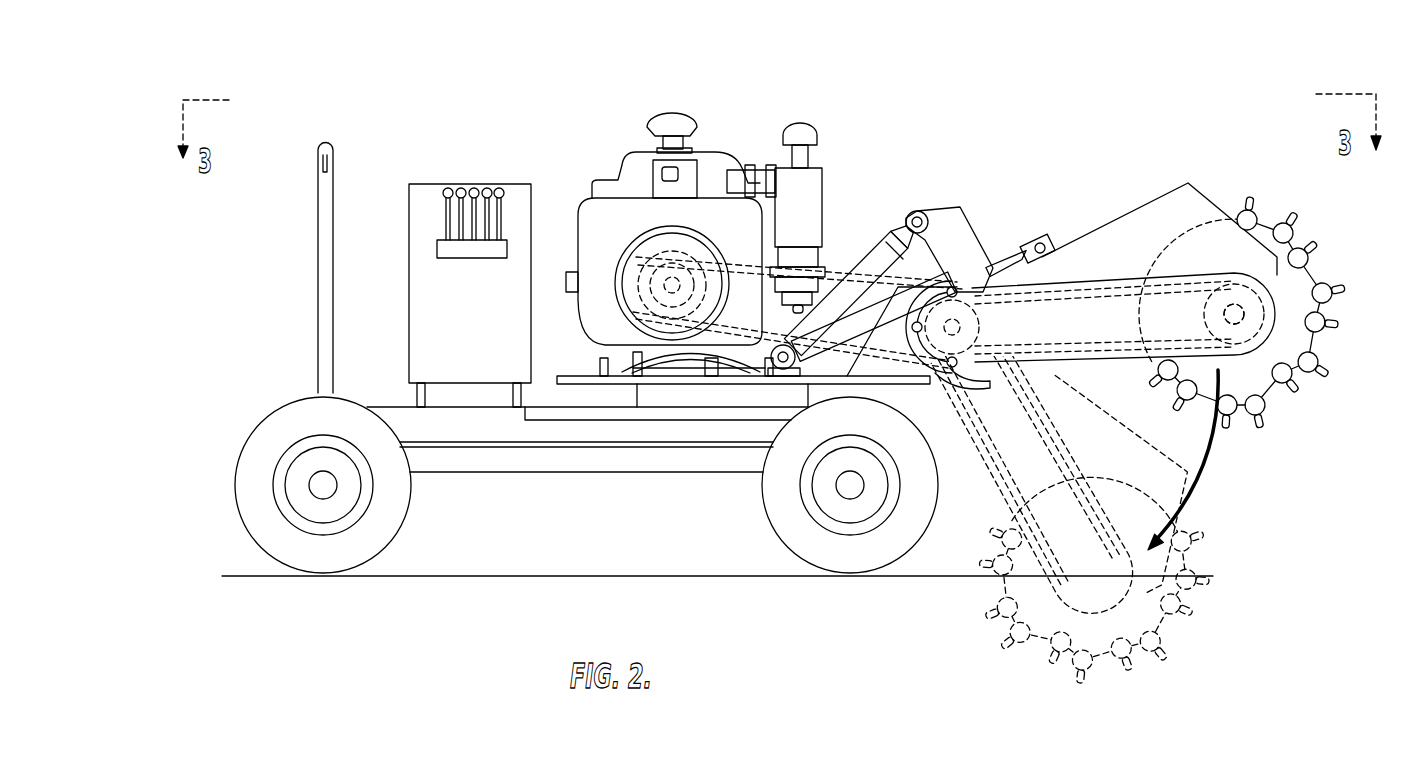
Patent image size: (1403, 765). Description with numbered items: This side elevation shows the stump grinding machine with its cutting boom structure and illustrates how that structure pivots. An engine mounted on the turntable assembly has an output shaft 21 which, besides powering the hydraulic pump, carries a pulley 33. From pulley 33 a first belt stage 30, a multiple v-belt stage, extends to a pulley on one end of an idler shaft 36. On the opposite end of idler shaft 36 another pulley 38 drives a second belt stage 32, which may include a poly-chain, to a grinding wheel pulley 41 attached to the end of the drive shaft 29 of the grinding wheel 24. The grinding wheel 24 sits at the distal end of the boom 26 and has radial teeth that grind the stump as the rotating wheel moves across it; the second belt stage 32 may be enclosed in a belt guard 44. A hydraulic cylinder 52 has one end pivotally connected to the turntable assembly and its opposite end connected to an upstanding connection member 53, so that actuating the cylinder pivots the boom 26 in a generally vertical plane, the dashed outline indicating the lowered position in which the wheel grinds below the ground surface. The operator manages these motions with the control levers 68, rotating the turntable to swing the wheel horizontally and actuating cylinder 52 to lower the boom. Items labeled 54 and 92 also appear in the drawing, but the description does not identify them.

The output shaft 21 is at (652, 272).
The grinding wheel 24 is at (1268, 220).
The boom 26 is at (1168, 183).
The drive shaft 29 is at (1243, 320).
The belt stage 30 is at (836, 262).
The belt stage 32 is at (1100, 287).
The pulley 33 is at (640, 290).
The idler shaft 36 is at (998, 262).
The pulley 38 is at (1047, 242).
The grinding wheel pulley 41 is at (1270, 294).
The belt guard 44 is at (1100, 364).
The hydraulic cylinder 52 is at (866, 230).
The upstanding connection member 53 is at (940, 210).
The frame 54 is at (572, 386).
The control levers 68 is at (440, 184).
The mounting bracket 92 is at (926, 250).